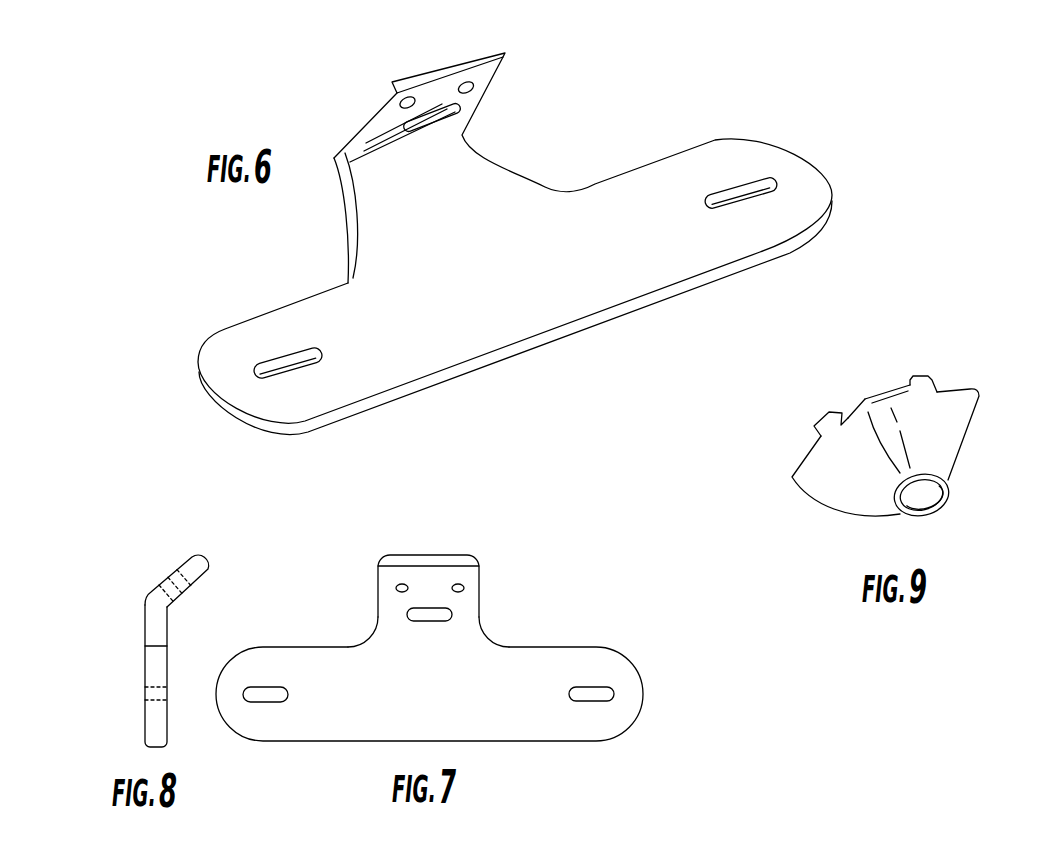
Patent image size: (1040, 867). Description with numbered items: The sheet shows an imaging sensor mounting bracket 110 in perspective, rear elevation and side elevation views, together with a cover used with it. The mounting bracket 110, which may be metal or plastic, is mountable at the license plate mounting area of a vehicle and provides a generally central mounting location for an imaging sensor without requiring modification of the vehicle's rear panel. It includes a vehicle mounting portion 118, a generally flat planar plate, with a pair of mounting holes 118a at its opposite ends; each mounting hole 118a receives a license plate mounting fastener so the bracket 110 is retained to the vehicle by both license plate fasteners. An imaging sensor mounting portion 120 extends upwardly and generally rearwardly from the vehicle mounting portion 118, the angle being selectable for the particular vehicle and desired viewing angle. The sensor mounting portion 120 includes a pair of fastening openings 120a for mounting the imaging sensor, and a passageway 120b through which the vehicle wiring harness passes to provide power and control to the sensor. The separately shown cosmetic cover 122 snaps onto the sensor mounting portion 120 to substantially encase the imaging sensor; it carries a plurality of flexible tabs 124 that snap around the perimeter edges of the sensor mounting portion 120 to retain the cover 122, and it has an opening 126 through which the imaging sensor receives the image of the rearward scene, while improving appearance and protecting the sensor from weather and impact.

In FIG. 6, the mounting bracket 110 is at (230, 287).
In FIG. 7, the mounting bracket 110 is at (586, 608).
In FIG. 8, the mounting bracket 110 is at (112, 640).
In FIG. 6, the vehicle mounting portion 118 is at (560, 305).
In FIG. 7, the vehicle mounting portion 118 is at (462, 679).
In FIG. 8, the vehicle mounting portion 118 is at (145, 725).
In FIG. 6, the mounting hole 118a is at (290, 363).
In FIG. 7, the mounting hole 118a is at (274, 690).
In FIG. 6, the imaging sensor mounting portion 120 is at (488, 68).
In FIG. 7, the imaging sensor mounting portion 120 is at (426, 612).
In FIG. 8, the imaging sensor mounting portion 120 is at (196, 554).
In FIG. 6, the fastening openings 120a is at (402, 103).
In FIG. 7, the fastening openings 120a is at (398, 589).
In FIG. 6, the passageway 120b is at (427, 122).
In FIG. 7, the passageway 120b is at (423, 620).
In FIG. 9, the cosmetic cover 122 is at (893, 372).
In FIG. 9, the flexible tabs 124 is at (926, 382).
In FIG. 9, the opening 126 is at (922, 500).